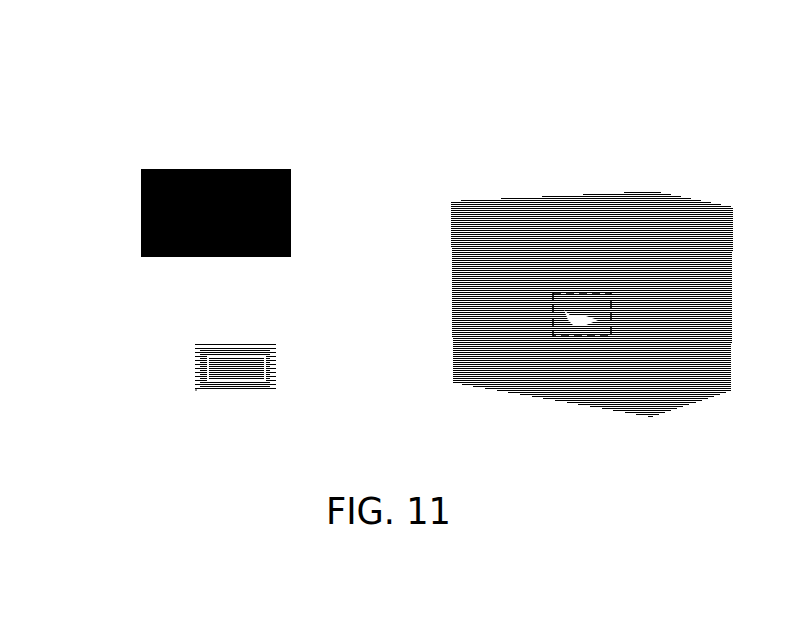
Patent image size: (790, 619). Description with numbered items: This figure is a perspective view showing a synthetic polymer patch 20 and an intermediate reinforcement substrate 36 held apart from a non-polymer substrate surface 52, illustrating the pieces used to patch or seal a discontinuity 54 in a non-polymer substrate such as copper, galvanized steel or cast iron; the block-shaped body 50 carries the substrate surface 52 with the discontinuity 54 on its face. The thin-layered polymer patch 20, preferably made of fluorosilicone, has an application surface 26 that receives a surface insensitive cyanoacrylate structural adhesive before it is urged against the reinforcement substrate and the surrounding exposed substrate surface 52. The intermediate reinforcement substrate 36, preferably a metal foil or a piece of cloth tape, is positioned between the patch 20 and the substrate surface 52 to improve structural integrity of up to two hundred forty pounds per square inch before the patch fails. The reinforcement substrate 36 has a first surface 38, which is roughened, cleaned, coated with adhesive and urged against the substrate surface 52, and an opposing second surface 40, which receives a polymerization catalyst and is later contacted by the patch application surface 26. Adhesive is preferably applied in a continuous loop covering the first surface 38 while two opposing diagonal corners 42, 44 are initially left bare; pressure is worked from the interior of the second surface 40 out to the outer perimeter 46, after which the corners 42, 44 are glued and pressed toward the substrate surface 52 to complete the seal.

The synthetic polymer patch 20 is at (186, 140).
The application surface 26 is at (227, 203).
The intermediate reinforcement substrate 36 is at (166, 344).
The first surface 38 is at (222, 370).
The second surface 40 is at (187, 381).
The diagonal corner 42 is at (268, 380).
The diagonal corner 44 is at (190, 340).
The outer perimeter 46 is at (245, 338).
The object 50 is at (592, 304).
The non-polymer substrate surface 52 is at (582, 329).
The discontinuity 54 is at (553, 325).